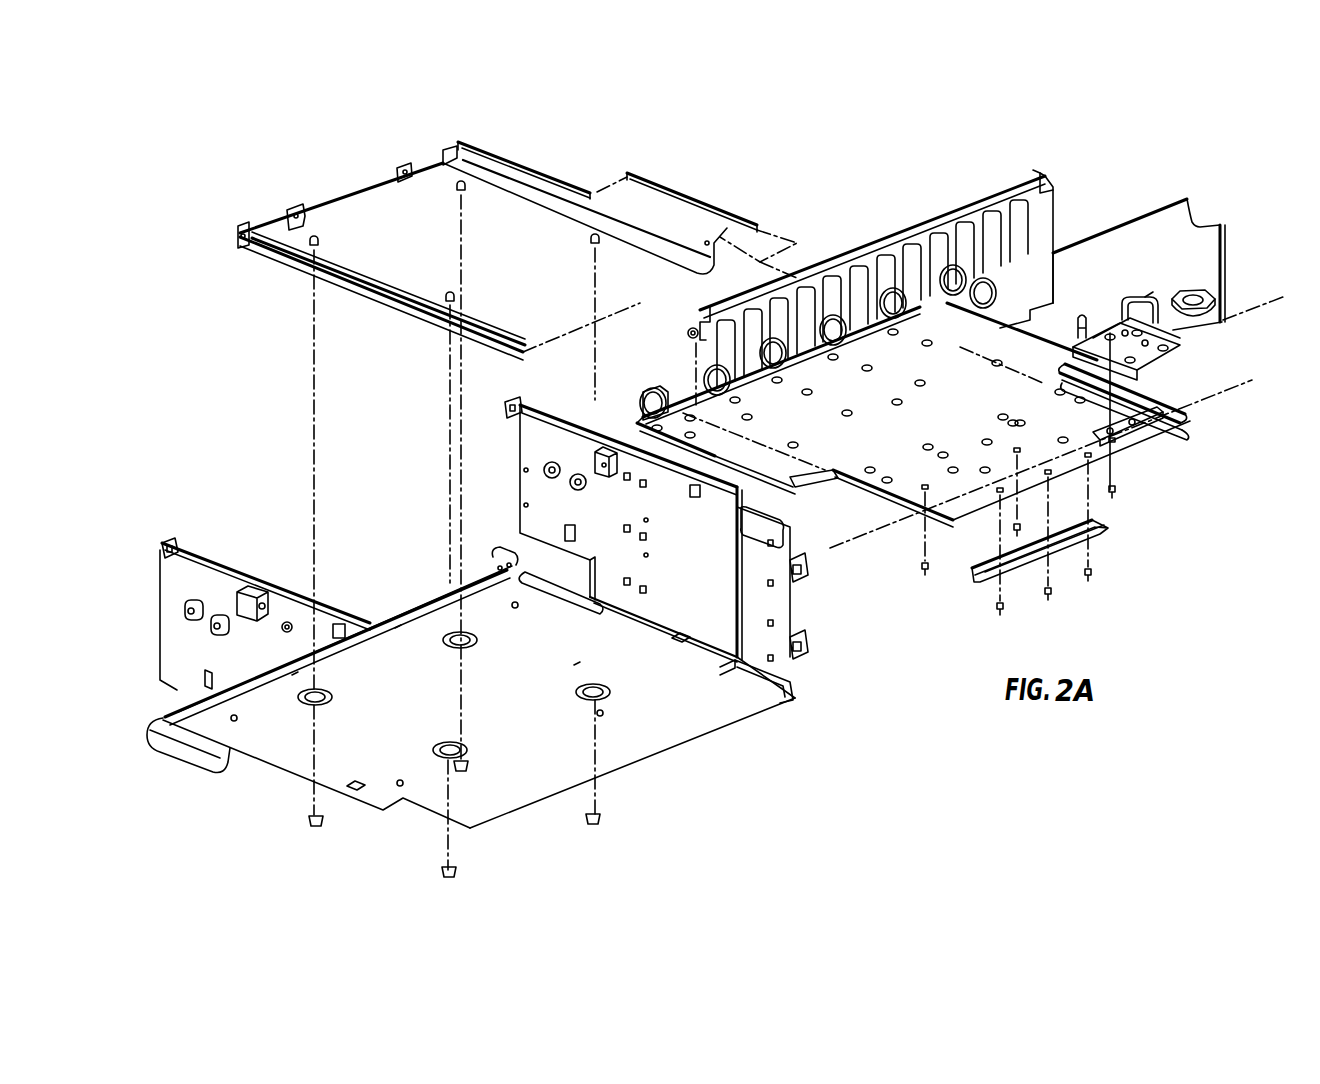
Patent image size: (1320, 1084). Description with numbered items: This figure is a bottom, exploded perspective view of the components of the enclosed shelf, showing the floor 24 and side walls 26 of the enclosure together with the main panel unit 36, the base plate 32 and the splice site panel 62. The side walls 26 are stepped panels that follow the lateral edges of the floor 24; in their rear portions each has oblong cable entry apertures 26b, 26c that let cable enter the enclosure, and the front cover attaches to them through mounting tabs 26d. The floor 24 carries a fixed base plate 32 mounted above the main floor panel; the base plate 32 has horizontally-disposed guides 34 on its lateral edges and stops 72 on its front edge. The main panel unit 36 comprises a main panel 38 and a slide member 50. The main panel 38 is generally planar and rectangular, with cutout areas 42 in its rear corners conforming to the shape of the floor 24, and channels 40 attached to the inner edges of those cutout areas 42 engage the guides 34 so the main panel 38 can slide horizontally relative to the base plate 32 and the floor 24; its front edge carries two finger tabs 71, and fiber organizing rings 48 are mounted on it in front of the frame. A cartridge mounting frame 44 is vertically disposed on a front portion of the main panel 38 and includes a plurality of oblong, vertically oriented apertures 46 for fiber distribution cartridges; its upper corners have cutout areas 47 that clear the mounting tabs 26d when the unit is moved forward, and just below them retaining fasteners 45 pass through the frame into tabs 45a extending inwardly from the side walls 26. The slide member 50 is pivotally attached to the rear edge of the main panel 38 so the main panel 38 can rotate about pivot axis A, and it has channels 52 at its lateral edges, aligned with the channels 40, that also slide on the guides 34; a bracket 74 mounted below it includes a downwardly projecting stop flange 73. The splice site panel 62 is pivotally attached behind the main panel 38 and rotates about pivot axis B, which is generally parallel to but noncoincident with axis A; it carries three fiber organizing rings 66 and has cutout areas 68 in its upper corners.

The floor 24 is at (503, 798).
The side walls 26 is at (185, 602).
The cable entry aperture 26b is at (793, 530).
The cable entry aperture 26c is at (790, 683).
The mounting tabs 26d is at (172, 540).
The base plate 32 is at (377, 217).
The guides 34 is at (640, 195).
The main panel unit 36 is at (902, 258).
The main panel 38 is at (1173, 410).
The channels 40 is at (1118, 390).
The cutout areas 42 is at (1128, 392).
The cartridge mounting frame 44 is at (870, 291).
The retaining fasteners 45 is at (1038, 188).
The tabs 45a is at (261, 594).
The apertures 46 is at (857, 276).
The cutout areas 47 is at (699, 317).
The fiber organizing rings 48 is at (641, 395).
The slide member 50 is at (1133, 440).
The channels 52 is at (1187, 426).
The splice site panel 62 is at (1173, 205).
The fiber organizing rings 66 is at (1200, 290).
The cutout areas 68 is at (1207, 223).
The finger tabs 71 is at (960, 285).
The stops 72 is at (293, 210).
The stop flange 73 is at (1063, 560).
The bracket 74 is at (1105, 515).
The pivot axis A is at (1227, 392).
The pivot axis B is at (1250, 312).